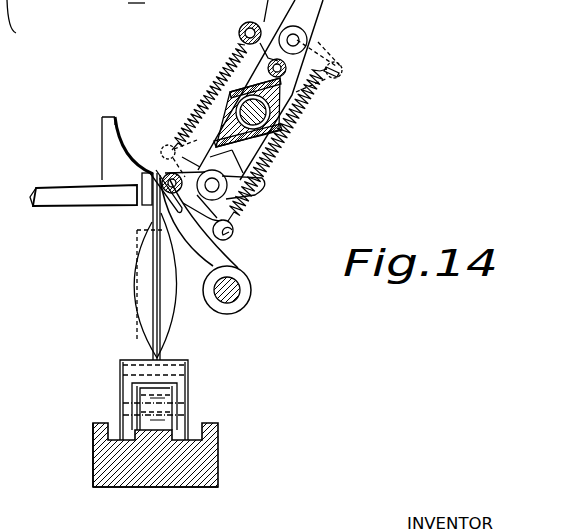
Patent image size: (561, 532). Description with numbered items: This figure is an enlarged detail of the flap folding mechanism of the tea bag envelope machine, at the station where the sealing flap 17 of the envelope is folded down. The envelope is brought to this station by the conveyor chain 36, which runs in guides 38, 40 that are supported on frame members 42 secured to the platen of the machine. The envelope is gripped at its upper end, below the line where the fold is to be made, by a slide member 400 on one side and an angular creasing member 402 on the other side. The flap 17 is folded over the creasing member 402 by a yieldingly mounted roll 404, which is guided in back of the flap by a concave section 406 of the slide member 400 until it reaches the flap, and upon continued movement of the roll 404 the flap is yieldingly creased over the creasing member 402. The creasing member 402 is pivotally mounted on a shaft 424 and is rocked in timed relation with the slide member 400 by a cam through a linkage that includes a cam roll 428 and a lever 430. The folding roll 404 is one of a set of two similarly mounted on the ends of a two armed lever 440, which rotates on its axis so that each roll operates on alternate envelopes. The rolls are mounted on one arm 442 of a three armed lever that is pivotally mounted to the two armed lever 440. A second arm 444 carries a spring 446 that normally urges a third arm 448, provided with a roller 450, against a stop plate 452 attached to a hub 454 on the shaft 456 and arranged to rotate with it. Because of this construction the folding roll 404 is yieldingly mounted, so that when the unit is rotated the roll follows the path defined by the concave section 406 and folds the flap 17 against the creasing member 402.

The flap 17 is at (171, 197).
The conveyor chain 36 is at (160, 403).
The guide 38 is at (93, 445).
The guide 40 is at (220, 453).
The frame member 42 is at (157, 487).
The slide member 400 is at (137, 177).
The angular creasing member 402 is at (215, 250).
The yieldingly mounted roll 404 is at (330, 4).
The concave section 406 is at (143, 95).
The shaft 424 is at (237, 297).
The cam roll 428 is at (35, 25).
The lever 430 is at (120, 5).
The two armed lever 440 is at (330, 100).
The arm 442 is at (308, 27).
The second arm 444 is at (197, 245).
The spring 446 is at (246, 38).
The third arm 448 is at (300, 60).
The roller 450 is at (342, 70).
The stop plate 452 is at (322, 86).
The hub 454 is at (296, 115).
The shaft 456 is at (224, 98).